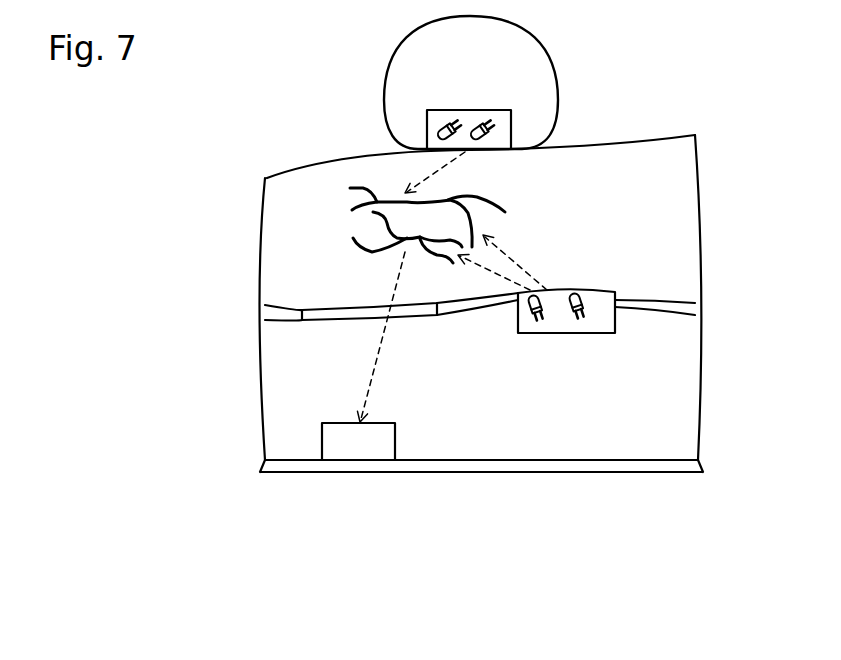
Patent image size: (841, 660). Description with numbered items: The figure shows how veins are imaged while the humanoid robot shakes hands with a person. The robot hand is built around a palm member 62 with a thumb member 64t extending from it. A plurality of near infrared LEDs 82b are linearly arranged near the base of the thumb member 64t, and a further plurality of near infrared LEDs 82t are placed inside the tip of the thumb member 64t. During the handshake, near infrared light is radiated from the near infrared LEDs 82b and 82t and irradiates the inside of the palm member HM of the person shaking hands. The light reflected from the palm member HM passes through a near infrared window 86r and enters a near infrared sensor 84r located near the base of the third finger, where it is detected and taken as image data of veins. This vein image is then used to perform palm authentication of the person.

The palm member 62 is at (530, 500).
The thumb member 64t is at (556, 63).
The near infrared LED 82t is at (458, 110).
The near infrared LED 82b is at (586, 295).
The near infrared sensor 84r is at (353, 448).
The near infrared window 86r is at (402, 318).
The palm member of a person HM is at (670, 206).